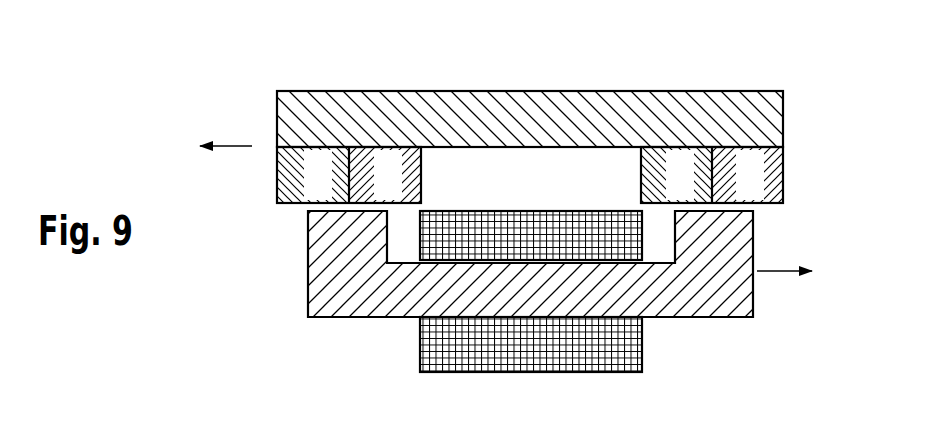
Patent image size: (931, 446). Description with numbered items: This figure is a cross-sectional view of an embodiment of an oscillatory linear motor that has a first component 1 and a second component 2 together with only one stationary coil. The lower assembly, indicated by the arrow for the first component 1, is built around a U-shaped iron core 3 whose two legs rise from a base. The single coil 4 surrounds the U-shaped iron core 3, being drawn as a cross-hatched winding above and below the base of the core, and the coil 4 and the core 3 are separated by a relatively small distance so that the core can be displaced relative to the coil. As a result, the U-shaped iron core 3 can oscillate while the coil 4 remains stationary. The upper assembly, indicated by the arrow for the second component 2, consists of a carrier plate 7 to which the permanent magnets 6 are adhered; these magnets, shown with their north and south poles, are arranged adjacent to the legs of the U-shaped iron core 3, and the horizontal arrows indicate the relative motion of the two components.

The first component 1 is at (506, 313).
The second component 2 is at (520, 116).
The U-shaped iron core 3 is at (730, 300).
The coil 4 is at (613, 350).
The permanent magnets 6 is at (292, 180).
The carrier plate 7 is at (760, 108).